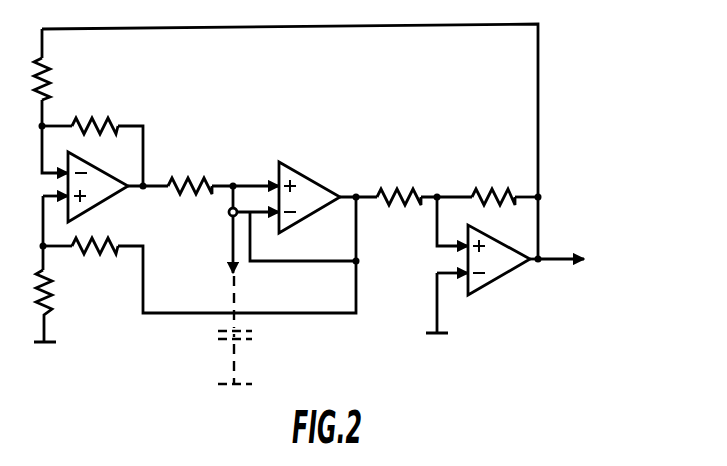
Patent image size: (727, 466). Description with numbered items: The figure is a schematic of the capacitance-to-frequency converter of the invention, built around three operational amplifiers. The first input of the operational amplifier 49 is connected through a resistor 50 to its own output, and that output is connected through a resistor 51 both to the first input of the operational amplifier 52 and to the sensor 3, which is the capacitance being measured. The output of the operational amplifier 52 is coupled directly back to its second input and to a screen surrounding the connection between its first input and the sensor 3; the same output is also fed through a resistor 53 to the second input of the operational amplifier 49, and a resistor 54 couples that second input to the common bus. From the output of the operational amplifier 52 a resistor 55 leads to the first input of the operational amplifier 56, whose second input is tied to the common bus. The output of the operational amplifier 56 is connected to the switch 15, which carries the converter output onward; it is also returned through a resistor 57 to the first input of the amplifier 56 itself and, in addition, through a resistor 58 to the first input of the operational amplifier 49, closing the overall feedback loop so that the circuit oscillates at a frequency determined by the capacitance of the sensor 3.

The resistor 58 is at (50, 70).
The resistor 50 is at (105, 121).
The resistor 51 is at (192, 178).
The operational amplifier 49 is at (112, 191).
The resistor 53 is at (100, 250).
The resistor 54 is at (50, 300).
The operational amplifier 52 is at (310, 182).
The resistor 55 is at (397, 186).
The resistor 57 is at (492, 188).
The operational amplifier 56 is at (498, 272).
The sensor 3 is at (252, 337).
The switch 15 is at (605, 260).